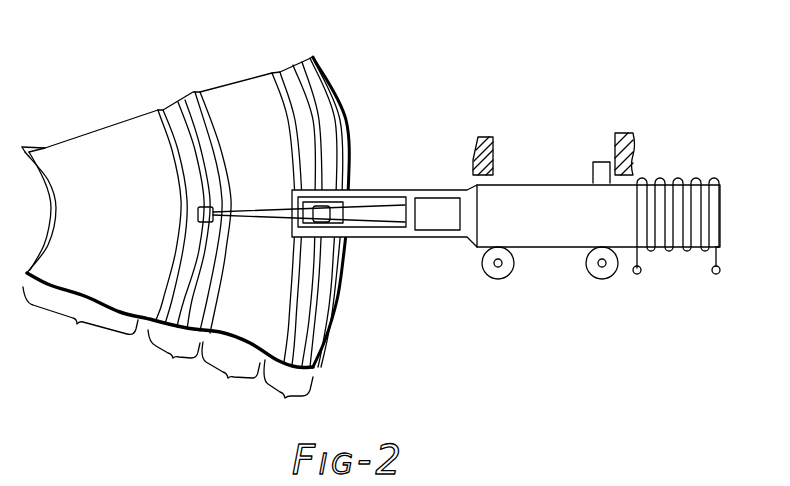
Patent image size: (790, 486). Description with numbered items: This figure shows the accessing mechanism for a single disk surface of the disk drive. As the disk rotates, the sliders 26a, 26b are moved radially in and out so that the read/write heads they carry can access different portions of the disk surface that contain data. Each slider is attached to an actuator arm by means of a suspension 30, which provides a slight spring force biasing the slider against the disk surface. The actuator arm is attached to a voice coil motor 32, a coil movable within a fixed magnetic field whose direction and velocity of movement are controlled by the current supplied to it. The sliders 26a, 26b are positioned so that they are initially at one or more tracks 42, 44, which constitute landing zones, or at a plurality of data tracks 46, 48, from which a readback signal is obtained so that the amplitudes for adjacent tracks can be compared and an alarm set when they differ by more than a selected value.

The slider 26a is at (308, 216).
The slider 26b is at (197, 213).
The suspension 30 is at (379, 222).
The voice coil motor 32 is at (697, 150).
The track 42 is at (302, 238).
The track 44 is at (185, 235).
The data tracks 46 is at (233, 237).
The data tracks 48 is at (167, 238).